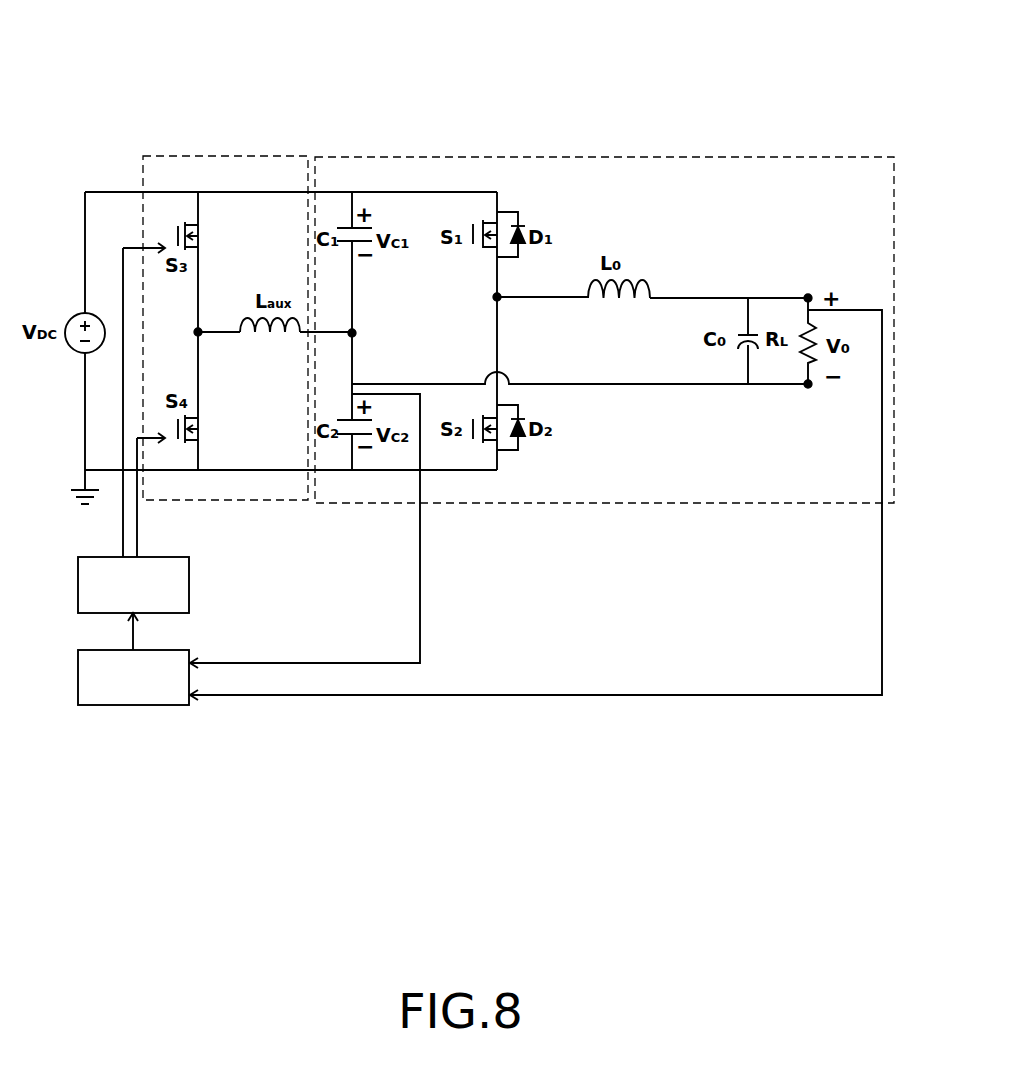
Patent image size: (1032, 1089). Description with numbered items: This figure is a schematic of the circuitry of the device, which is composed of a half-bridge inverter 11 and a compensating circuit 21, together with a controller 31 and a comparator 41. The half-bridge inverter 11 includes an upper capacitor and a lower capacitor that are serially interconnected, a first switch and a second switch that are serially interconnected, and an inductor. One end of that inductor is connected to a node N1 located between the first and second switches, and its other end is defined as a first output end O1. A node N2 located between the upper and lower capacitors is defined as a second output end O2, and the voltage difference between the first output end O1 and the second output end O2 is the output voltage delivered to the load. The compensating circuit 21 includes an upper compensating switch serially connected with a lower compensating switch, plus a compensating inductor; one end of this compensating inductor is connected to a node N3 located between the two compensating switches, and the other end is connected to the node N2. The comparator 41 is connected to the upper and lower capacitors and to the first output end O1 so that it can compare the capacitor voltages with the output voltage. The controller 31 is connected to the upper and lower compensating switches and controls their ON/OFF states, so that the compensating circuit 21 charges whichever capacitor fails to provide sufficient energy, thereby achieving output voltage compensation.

The compensating circuit 21 is at (247, 157).
The half-bridge inverter 11 is at (725, 157).
The controller 31 is at (78, 585).
The comparator 41 is at (142, 707).
The node N1 is at (497, 297).
The node N2 is at (352, 333).
The node N3 is at (198, 332).
The first output end O1 is at (808, 298).
The second output end O2 is at (808, 384).